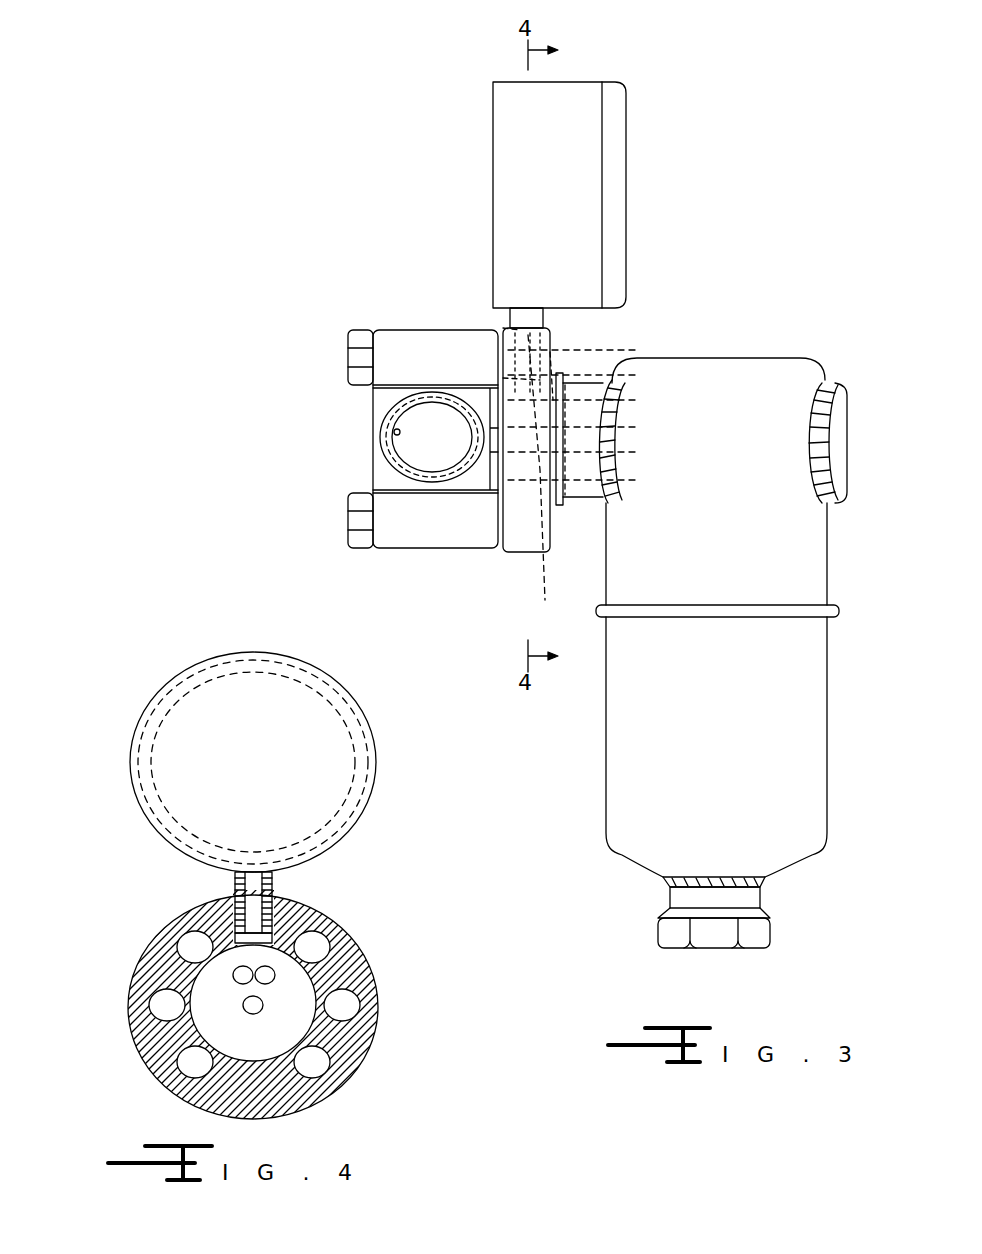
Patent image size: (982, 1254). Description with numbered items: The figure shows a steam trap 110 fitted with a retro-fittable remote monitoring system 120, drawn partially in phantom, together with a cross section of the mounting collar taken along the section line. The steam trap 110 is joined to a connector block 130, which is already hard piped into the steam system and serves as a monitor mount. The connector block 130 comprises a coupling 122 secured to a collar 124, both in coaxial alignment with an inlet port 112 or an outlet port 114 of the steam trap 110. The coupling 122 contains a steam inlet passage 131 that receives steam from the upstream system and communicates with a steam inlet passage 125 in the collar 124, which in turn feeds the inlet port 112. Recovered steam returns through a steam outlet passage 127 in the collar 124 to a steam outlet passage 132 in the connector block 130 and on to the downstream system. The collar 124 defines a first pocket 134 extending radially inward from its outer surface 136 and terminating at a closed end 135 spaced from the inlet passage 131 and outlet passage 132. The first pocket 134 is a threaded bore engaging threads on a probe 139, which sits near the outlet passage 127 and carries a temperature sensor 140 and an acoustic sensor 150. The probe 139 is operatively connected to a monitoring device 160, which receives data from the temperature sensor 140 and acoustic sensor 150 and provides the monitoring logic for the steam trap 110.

In FIG. 3, the steam trap 110 is at (600, 745).
In FIG. 3, the inlet port 112 is at (588, 470).
In FIG. 3, the outlet port 114 is at (640, 428).
In FIG. 3, the remote monitoring system 120 is at (315, 260).
In FIG. 3, the coupling 122 is at (438, 550).
In FIG. 3, the collar 124 is at (521, 556).
In FIG. 4, the collar 124 is at (128, 961).
In FIG. 3, the steam inlet passage 125 is at (539, 477).
In FIG. 4, the steam inlet passage 125 is at (262, 1004).
In FIG. 3, the steam outlet passage 127 is at (503, 378).
In FIG. 4, the steam outlet passage 127 is at (258, 984).
In FIG. 3, the connector block 130 is at (422, 318).
In FIG. 3, the steam inlet passage 131 is at (385, 473).
In FIG. 3, the steam outlet passage 132 is at (397, 432).
In FIG. 3, the first pocket 134 is at (637, 352).
In FIG. 3, the closed end 135 is at (627, 375).
In FIG. 4, the closed end 135 is at (270, 943).
In FIG. 4, the outer surface 136 is at (302, 893).
In FIG. 3, the probe 139 is at (548, 318).
In FIG. 4, the probe 139 is at (235, 878).
In FIG. 3, the temperature sensor 140 is at (503, 325).
In FIG. 3, the acoustic sensor 150 is at (553, 352).
In FIG. 3, the monitoring device 160 is at (488, 153).
In FIG. 4, the monitoring device 160 is at (132, 738).